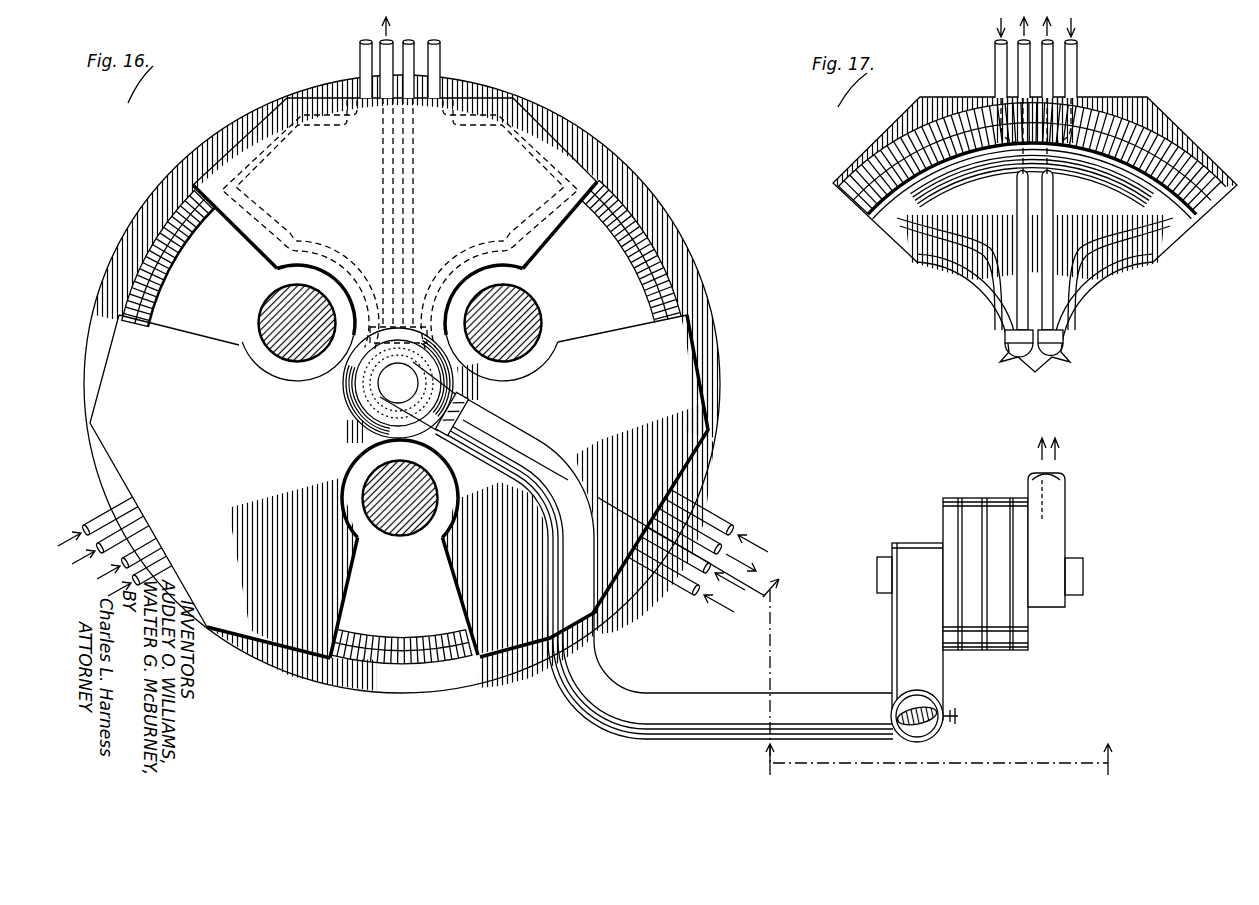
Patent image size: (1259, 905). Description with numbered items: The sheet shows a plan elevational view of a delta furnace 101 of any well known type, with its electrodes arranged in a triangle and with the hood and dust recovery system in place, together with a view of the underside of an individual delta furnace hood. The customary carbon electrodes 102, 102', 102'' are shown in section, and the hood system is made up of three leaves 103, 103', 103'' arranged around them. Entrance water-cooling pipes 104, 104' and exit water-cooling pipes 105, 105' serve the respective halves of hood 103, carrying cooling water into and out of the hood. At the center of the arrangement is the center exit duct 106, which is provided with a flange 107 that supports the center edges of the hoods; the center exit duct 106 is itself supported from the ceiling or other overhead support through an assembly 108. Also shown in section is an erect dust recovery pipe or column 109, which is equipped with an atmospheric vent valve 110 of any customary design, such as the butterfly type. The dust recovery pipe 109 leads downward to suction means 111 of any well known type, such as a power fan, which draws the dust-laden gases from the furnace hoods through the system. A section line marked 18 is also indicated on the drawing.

In FIG. 16, the section line 18- 18 is at (83, 230).
In FIG. 16, the delta furnace 101 is at (670, 232).
In FIG. 16, the carbon electrode 102 is at (521, 281).
In FIG. 16, the carbon electrode 102' is at (404, 549).
In FIG. 16, the carbon electrode 102'' is at (262, 283).
In FIG. 17, the hood leaf 103 is at (1035, 234).
In FIG. 16, the hood leaf 103' is at (611, 501).
In FIG. 16, the hood leaf 103'' is at (217, 511).
In FIG. 16, the entrance water-cooling pipe 104 is at (455, 60).
In FIG. 17, the entrance water-cooling pipe 104 is at (981, 80).
In FIG. 16, the entrance water-cooling pipe 104' is at (342, 60).
In FIG. 17, the entrance water-cooling pipe 104' is at (1093, 80).
In FIG. 16, the exit water-cooling pipe 105 is at (445, 69).
In FIG. 17, the exit water-cooling pipe 105 is at (986, 187).
In FIG. 16, the exit water-cooling pipe 105' is at (346, 57).
In FIG. 17, the exit water-cooling pipe 105' is at (1084, 186).
In FIG. 16, the center exit duct 106 is at (378, 386).
In FIG. 16, the flange 107 is at (362, 410).
In FIG. 16, the assembly 108 is at (466, 402).
In FIG. 16, the dust recovery pipe 109 is at (940, 725).
In FIG. 16, the atmospheric vent valve 110 is at (958, 712).
In FIG. 16, the suction means 111 is at (968, 498).